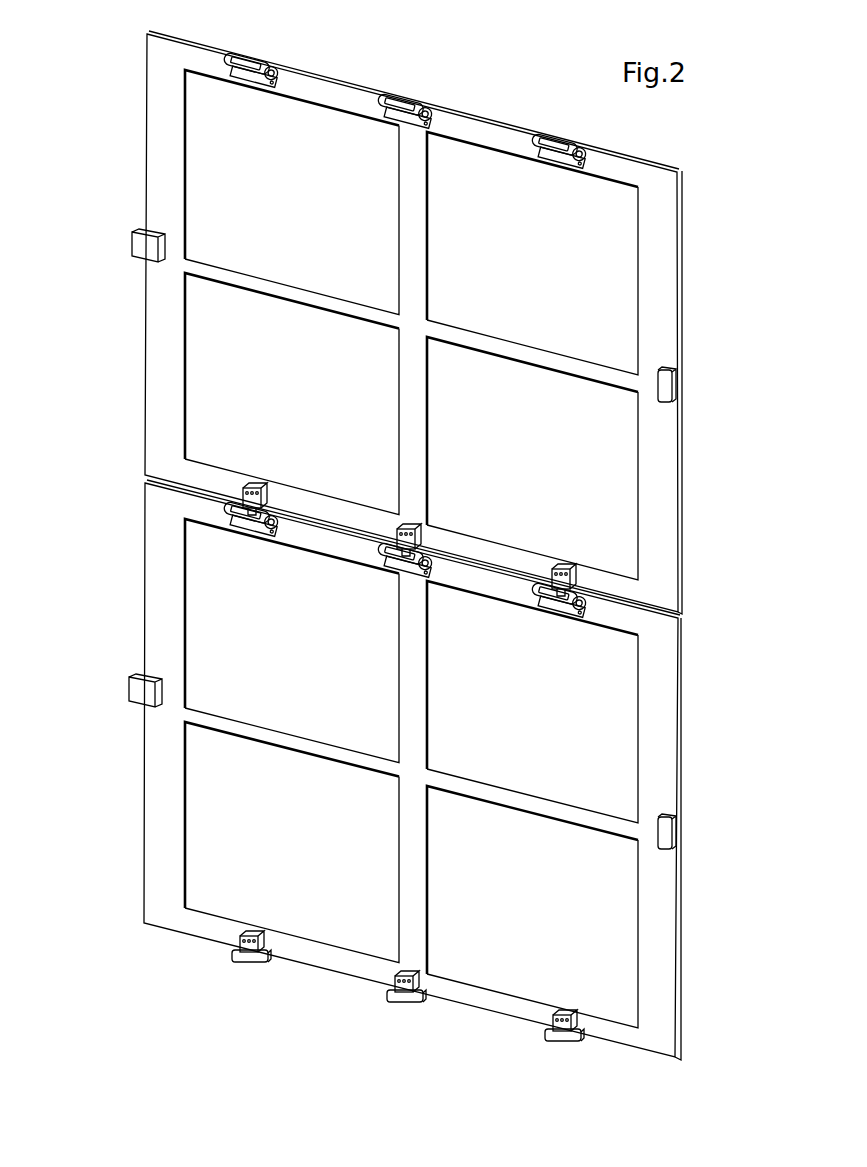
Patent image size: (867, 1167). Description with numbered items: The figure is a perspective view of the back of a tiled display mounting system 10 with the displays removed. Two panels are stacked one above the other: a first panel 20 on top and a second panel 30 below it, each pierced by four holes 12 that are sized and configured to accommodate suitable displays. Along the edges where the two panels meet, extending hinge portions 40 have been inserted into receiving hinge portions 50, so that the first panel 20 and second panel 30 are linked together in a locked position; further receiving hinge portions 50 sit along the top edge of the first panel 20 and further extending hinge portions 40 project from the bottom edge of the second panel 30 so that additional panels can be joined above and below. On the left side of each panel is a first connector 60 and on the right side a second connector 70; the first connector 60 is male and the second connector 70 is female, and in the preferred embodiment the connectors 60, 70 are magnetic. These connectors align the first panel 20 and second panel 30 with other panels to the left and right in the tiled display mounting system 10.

The tiled display mounting system 10 is at (80, 96).
The holes 12 is at (281, 193).
The first panel 20 is at (153, 388).
The second panel 30 is at (153, 573).
The extending hinge portions 40 is at (265, 496).
The receiving hinge portions 50 is at (557, 137).
The first connector 60 is at (143, 244).
The second connector 70 is at (674, 386).